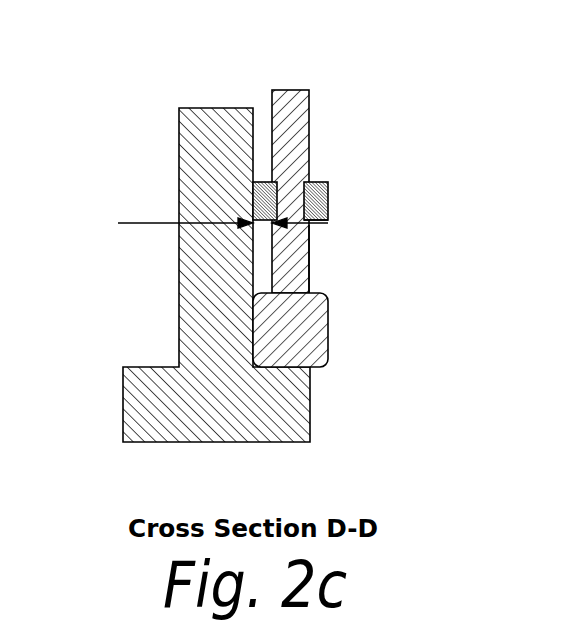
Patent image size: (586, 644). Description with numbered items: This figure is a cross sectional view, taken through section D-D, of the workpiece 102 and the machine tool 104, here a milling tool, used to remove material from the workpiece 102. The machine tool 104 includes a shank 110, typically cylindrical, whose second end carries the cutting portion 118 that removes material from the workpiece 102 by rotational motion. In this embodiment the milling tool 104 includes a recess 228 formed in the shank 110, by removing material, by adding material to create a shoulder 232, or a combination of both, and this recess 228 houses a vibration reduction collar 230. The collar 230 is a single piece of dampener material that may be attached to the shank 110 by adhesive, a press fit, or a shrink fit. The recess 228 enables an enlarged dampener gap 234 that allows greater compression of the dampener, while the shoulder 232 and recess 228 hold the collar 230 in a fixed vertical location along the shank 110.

The workpiece 102 is at (152, 145).
The machine tool 104 is at (317, 98).
The shank 110 is at (310, 257).
The cutting portion 118 is at (328, 332).
The recess 228 is at (312, 177).
The vibration reduction collar 230 is at (328, 202).
The shoulder 232 is at (328, 220).
The dampener gap 234 is at (196, 223).